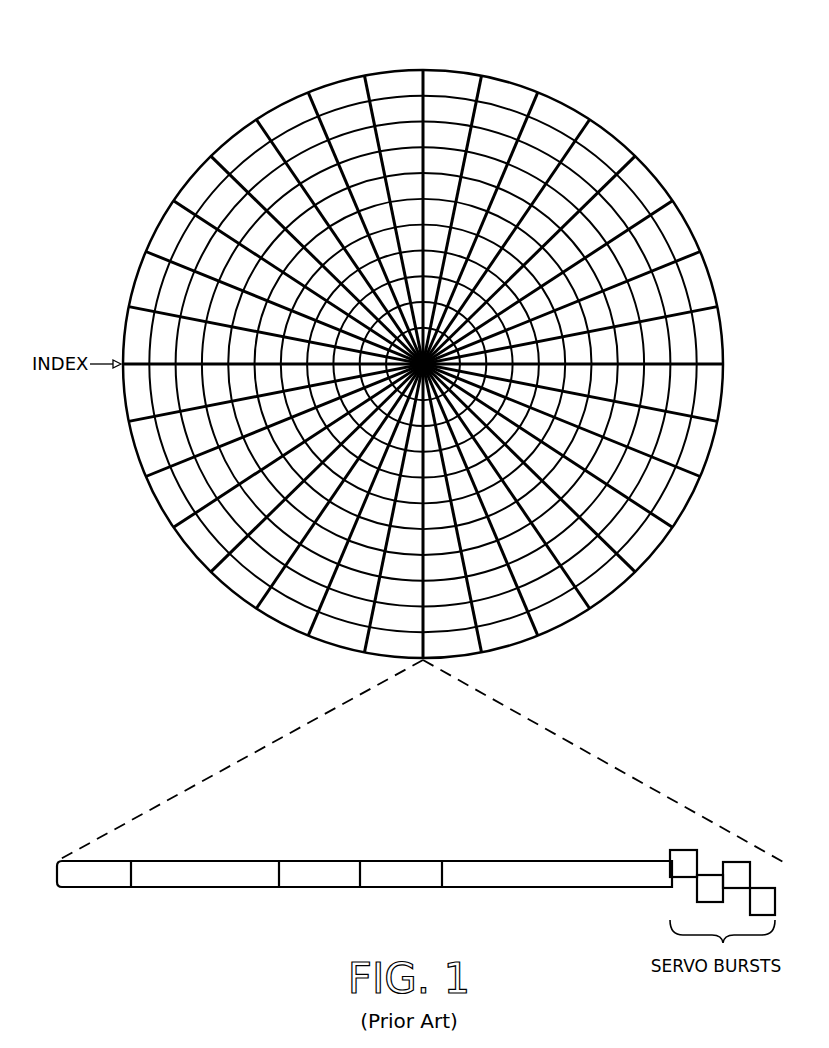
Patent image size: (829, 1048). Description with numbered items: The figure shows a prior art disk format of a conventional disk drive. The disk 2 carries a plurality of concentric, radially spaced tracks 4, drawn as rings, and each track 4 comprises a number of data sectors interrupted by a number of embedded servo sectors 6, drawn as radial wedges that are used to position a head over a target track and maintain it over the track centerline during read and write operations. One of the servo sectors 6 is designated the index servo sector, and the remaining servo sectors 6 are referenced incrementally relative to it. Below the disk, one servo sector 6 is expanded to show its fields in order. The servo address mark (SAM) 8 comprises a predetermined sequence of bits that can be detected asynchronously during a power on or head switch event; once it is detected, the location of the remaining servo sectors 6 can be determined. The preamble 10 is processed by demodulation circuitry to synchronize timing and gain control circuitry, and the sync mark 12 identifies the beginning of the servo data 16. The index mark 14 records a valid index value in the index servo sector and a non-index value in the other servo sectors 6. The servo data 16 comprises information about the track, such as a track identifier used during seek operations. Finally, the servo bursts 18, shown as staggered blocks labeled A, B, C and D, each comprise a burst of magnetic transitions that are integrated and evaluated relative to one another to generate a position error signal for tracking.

The disk 2 is at (203, 73).
The track 4 is at (500, 122).
The servo sector 6 is at (425, 72).
The servo address mark (SAM) 8 is at (93, 887).
The preamble 10 is at (200, 887).
The sync mark 12 is at (316, 887).
The index mark 14 is at (398, 887).
The servo data 16 is at (543, 887).
The servo bursts 18 is at (658, 833).